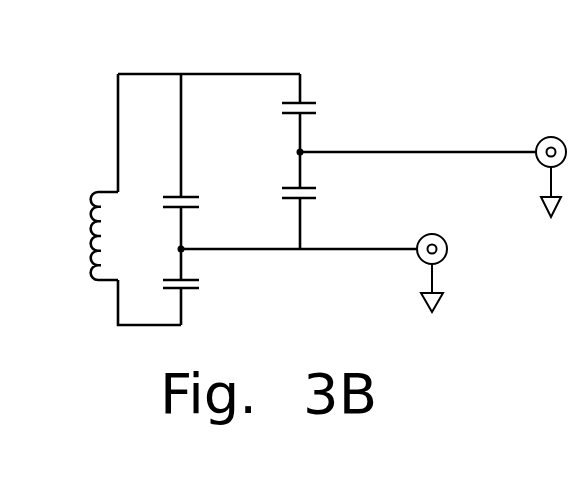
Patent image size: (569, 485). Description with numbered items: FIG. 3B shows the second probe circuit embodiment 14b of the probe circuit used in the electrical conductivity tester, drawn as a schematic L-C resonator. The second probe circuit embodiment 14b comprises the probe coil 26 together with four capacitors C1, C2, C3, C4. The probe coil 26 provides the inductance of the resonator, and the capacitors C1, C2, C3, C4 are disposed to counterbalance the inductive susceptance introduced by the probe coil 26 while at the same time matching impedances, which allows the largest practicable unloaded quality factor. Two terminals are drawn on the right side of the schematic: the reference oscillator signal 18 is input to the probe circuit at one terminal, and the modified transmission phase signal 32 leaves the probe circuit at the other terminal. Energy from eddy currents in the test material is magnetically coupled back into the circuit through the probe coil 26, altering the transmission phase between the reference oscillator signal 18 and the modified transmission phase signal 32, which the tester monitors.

The second probe circuit embodiment 14b is at (318, 197).
The probe coil 26 is at (86, 304).
The reference oscillator signal 18 is at (376, 251).
The modified transmission phase signal 32 is at (494, 154).
The capacitor C1 is at (198, 205).
The capacitor C2 is at (198, 289).
The capacitor C3 is at (317, 111).
The capacitor C4 is at (317, 196).